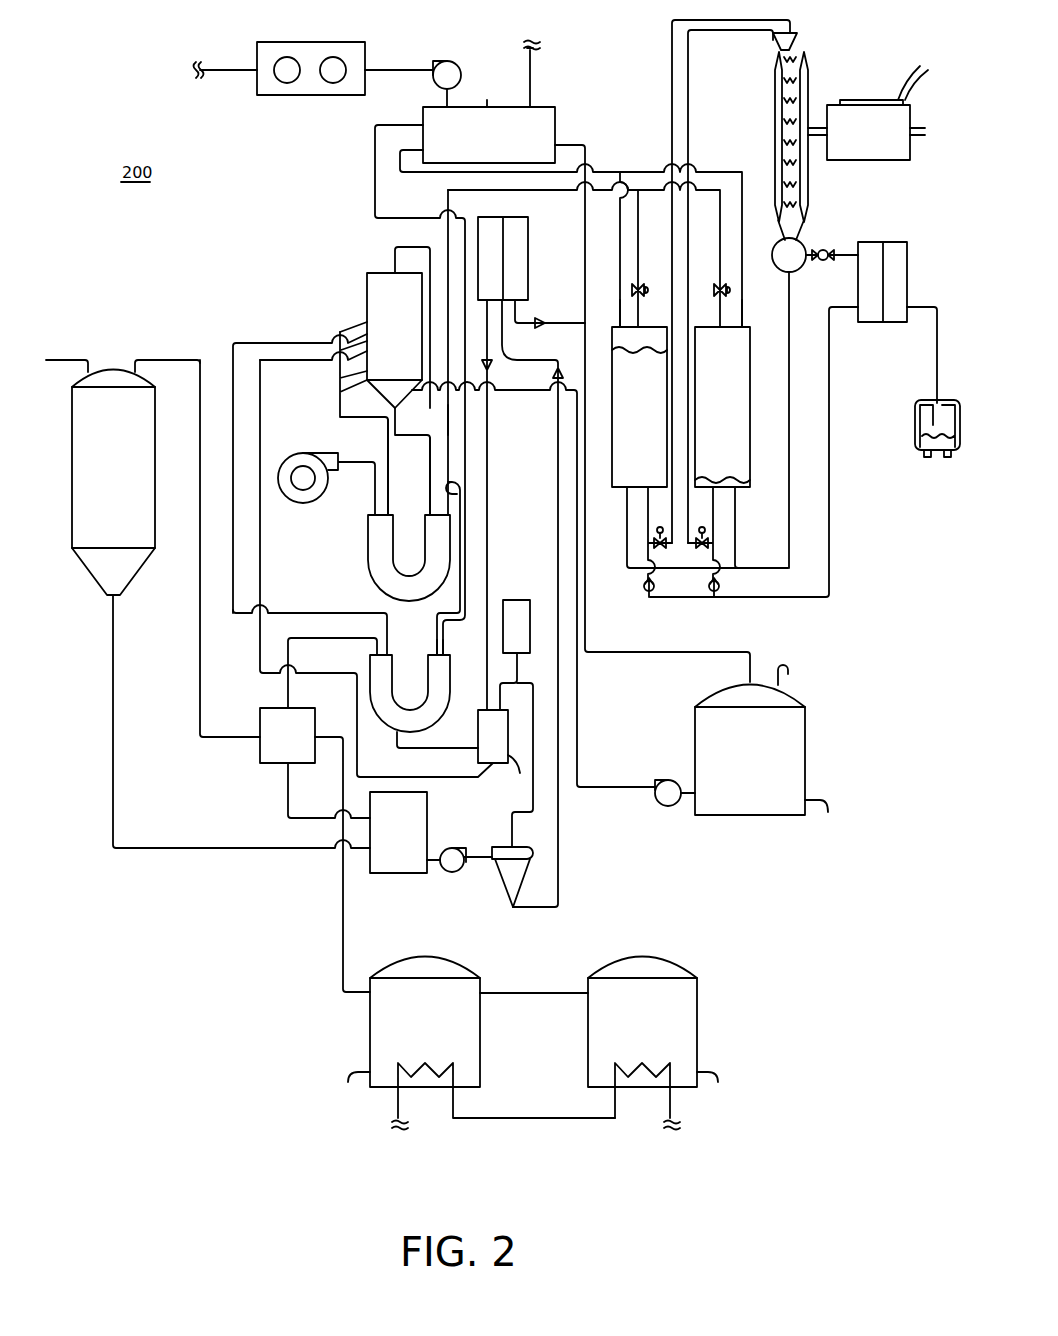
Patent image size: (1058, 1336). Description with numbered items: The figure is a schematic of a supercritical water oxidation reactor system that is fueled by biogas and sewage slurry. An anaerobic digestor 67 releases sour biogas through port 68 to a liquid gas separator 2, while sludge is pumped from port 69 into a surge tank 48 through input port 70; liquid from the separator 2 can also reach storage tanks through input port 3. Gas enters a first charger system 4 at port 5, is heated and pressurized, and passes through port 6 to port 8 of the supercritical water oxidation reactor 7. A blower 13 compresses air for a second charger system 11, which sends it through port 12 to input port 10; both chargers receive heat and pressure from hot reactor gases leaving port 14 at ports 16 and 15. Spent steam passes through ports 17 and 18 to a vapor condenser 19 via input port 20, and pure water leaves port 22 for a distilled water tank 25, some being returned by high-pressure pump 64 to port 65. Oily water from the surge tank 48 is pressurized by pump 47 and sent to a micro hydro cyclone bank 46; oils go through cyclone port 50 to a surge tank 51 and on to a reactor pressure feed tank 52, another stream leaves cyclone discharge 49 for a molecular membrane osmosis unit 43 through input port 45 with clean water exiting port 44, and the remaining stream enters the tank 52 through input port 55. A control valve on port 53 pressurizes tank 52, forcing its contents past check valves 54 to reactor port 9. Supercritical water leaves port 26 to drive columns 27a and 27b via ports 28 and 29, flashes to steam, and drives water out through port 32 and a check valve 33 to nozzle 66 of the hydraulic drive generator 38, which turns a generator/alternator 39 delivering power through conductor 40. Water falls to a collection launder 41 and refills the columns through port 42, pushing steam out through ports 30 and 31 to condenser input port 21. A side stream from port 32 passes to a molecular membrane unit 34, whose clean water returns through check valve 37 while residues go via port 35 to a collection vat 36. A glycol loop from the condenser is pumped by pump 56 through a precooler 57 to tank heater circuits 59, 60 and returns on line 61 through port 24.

The liquid gas separator 2 is at (260, 712).
The input port 3 is at (370, 997).
The first charger system 4 is at (380, 730).
The port 5 is at (370, 655).
The port 6 is at (387, 645).
The supercritical water oxidation reactor 7 is at (366, 298).
The port 8 is at (360, 325).
The port 9 is at (357, 355).
The input port 10 is at (357, 383).
The second charger system 11 is at (368, 555).
The port 12 is at (390, 500).
The blower 13 is at (303, 503).
The port 14 is at (393, 265).
The port 15 is at (430, 510).
The port 16 is at (428, 652).
The port 17 is at (445, 652).
The port 18 is at (462, 478).
The vapor condenser 19 is at (487, 107).
The input port 20 is at (422, 118).
The input port 21 is at (422, 147).
The port 22 is at (560, 145).
The port 24 is at (541, 74).
The distilled water tank 25 is at (700, 695).
The port 26 is at (410, 412).
The drive column 27a is at (612, 387).
The drive column 27b is at (750, 385).
The port 28 is at (640, 320).
The port 29 is at (712, 320).
The port 30 is at (612, 320).
The port 31 is at (748, 320).
The port 32 is at (655, 545).
The check valve 33 is at (648, 590).
The molecular membrane unit 34 is at (898, 322).
The port 35 is at (907, 300).
The collection vat 36 is at (915, 425).
The check valve 37 is at (826, 248).
The hydraulic drive generator 38 is at (808, 175).
The generator/alternator 39 is at (870, 160).
The conductor 40 is at (920, 76).
The collection launder 41 is at (790, 272).
The port 42 is at (625, 490).
The molecular membrane osmosis unit 43 is at (528, 260).
The port 44 is at (518, 310).
The input port 45 is at (505, 325).
The micro hydro cyclone bank 46 is at (508, 885).
The pump 47 is at (450, 872).
The surge tank 48 is at (395, 873).
The cyclone discharge 49 is at (514, 905).
The cyclone port 50 is at (512, 835).
The surge tank 51 is at (518, 680).
The reactor pressure feed tank 52 is at (518, 778).
The port 53 is at (400, 745).
The check valves 54 is at (485, 772).
The input port 55 is at (487, 705).
The pump 56 is at (445, 62).
The precooler 57 is at (305, 95).
The tank heater circuit 59 is at (402, 1125).
The tank heater circuit 60 is at (676, 1122).
The line 61 is at (526, 48).
The high-pressure pump 64 is at (665, 806).
The port 65 is at (440, 395).
The nozzle 66 is at (797, 42).
The anaerobic digestor 67 is at (72, 492).
The port 68 is at (135, 372).
The port 69 is at (122, 585).
The input port 70 is at (370, 860).